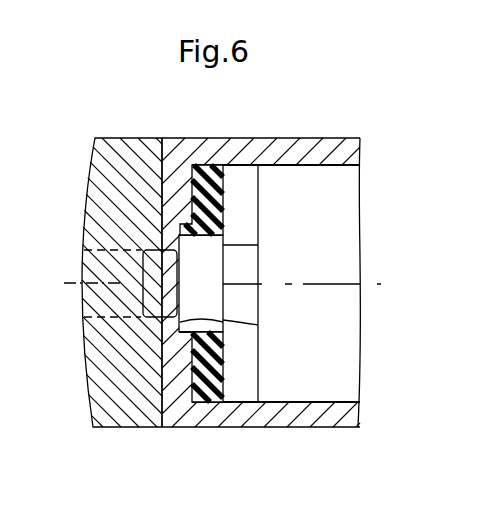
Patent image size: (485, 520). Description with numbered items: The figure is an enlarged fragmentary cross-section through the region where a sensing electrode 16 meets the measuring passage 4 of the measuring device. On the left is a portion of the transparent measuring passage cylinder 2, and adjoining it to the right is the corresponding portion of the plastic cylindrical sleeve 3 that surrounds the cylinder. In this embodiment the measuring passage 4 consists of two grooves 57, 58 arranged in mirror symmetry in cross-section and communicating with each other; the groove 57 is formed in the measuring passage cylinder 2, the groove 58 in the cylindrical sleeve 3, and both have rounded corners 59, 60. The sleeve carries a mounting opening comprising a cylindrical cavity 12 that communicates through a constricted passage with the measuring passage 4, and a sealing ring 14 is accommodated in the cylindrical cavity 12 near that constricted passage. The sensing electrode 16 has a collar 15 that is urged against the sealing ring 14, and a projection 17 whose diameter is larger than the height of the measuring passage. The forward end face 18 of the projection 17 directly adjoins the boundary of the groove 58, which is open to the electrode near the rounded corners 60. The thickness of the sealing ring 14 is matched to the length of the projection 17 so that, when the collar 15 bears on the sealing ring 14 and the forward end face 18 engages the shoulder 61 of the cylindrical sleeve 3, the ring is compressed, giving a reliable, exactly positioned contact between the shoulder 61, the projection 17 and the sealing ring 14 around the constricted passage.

The measuring passage cylinder 2 is at (103, 385).
The cylindrical sleeve 3 is at (243, 410).
The measuring passage 4 is at (148, 293).
The cylindrical cavity 12 is at (292, 410).
The sealing ring 14 is at (207, 406).
The collar 15 is at (250, 193).
The sensing electrode 16 is at (348, 238).
The projection 17 is at (258, 245).
The forward end face 18 is at (258, 325).
The groove 57 is at (150, 267).
The groove 58 is at (170, 268).
The rounded corner 59 is at (144, 318).
The rounded corner 60 is at (176, 301).
The shoulder 61 is at (161, 235).